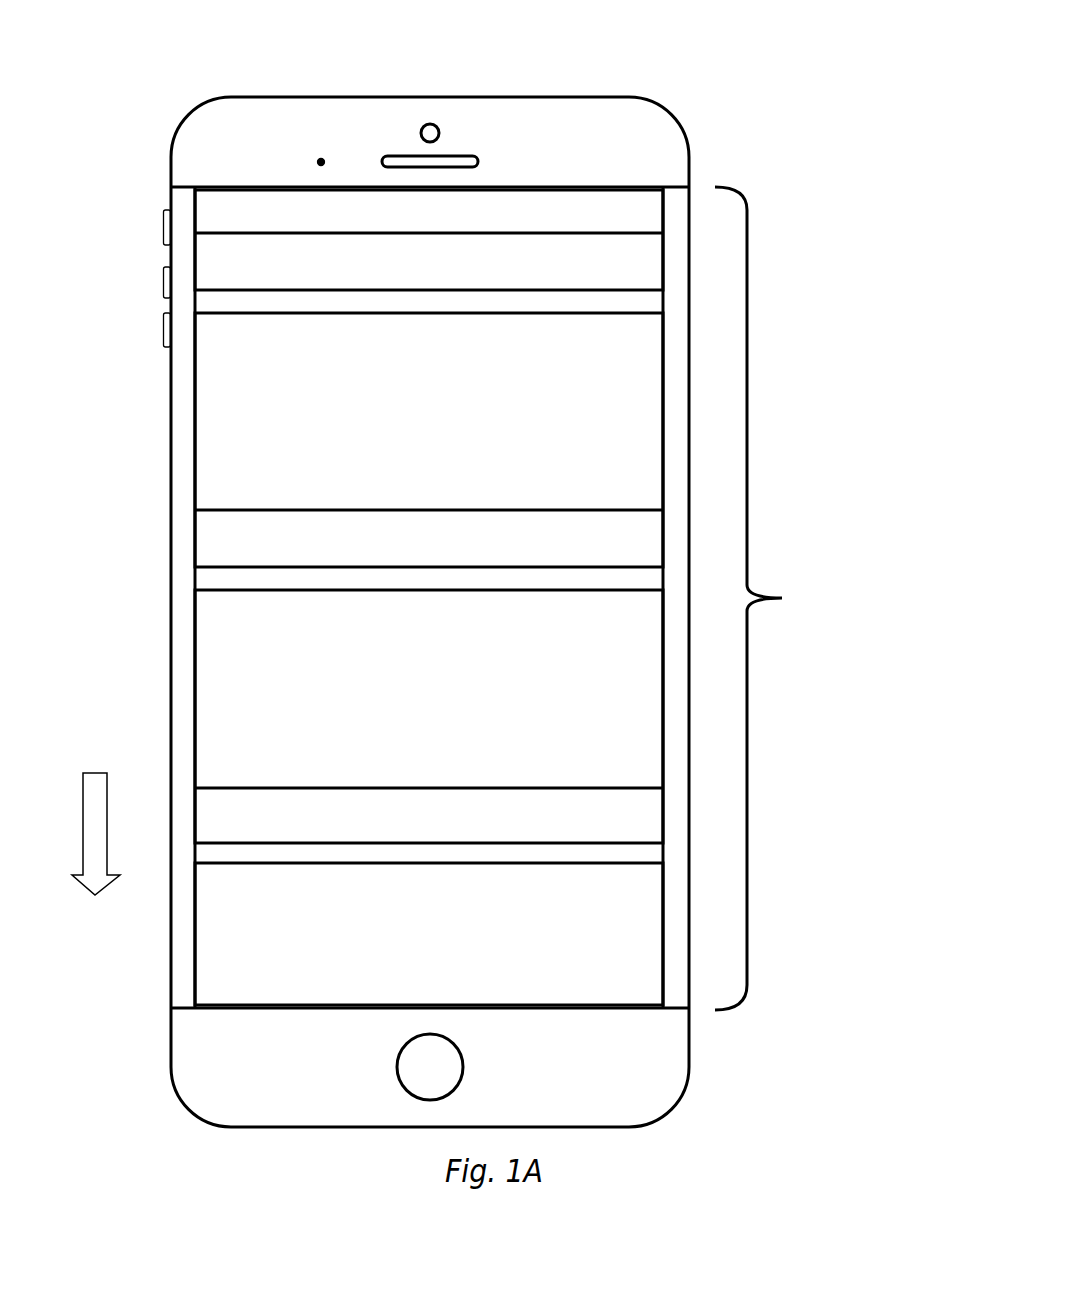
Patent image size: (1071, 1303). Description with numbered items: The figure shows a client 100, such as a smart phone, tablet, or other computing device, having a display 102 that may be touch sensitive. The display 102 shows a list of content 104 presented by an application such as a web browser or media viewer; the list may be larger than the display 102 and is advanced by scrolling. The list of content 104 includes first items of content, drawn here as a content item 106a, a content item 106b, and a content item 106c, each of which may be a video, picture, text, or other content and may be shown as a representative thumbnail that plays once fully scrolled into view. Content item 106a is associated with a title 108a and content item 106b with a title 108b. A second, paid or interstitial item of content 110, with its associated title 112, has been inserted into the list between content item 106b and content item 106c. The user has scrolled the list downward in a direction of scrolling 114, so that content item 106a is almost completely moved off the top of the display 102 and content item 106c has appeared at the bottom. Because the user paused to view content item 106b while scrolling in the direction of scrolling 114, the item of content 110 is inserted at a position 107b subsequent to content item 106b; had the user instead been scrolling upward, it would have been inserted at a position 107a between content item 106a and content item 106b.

The client 100 is at (669, 94).
The display 102 is at (190, 223).
The list of content 104 is at (795, 598).
The content item 106a is at (429, 240).
The content item 106b is at (429, 440).
The content item 106c is at (429, 934).
The position 107a is at (205, 300).
The position 107b is at (197, 582).
The title 108a is at (429, 250).
The title 108b is at (429, 528).
The item of content 110 is at (429, 716).
The title 112 is at (429, 805).
The direction of scrolling 114 is at (93, 789).